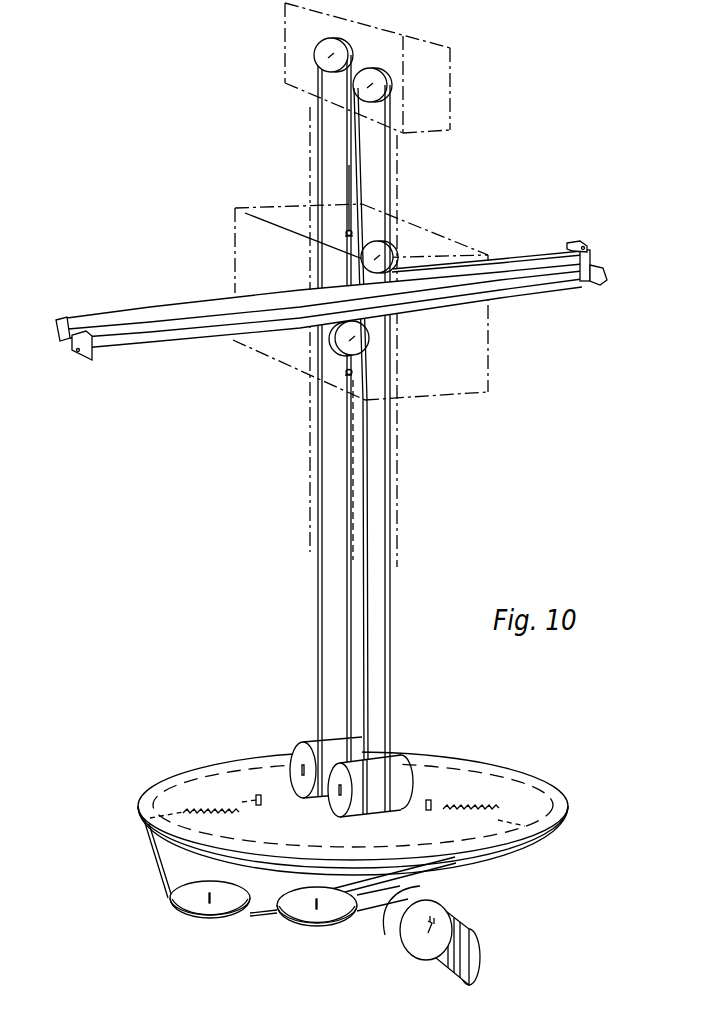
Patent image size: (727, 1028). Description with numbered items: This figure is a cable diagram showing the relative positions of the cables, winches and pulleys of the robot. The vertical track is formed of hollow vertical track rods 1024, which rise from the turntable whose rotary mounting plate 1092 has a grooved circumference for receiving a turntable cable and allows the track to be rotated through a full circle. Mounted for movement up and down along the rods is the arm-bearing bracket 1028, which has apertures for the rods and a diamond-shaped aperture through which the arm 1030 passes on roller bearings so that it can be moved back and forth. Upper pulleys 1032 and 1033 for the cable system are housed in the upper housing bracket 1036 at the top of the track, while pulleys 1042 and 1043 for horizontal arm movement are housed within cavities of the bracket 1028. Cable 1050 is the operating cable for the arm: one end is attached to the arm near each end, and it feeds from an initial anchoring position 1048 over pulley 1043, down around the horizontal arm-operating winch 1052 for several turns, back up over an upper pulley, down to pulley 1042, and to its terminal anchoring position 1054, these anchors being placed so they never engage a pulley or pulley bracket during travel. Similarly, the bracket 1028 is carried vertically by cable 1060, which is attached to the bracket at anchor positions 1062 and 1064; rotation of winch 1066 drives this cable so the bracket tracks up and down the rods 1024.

The vertical track rods 1024 is at (407, 337).
The arm-bearing bracket 1028 is at (399, 303).
The arm 1030 is at (331, 299).
The upper pulley 1032 is at (273, 49).
The upper pulley 1033 is at (433, 85).
The upper housing bracket 1036 is at (389, 68).
The pulley 1042 is at (418, 235).
The pulley 1043 is at (299, 365).
The initial anchoring position 1048 is at (51, 368).
The cable 1050 is at (413, 422).
The arm-operating winch 1052 is at (396, 798).
The terminal anchoring position 1054 is at (555, 215).
The cable 1060 is at (293, 400).
The anchor position 1062 is at (287, 200).
The anchor position 1064 is at (290, 465).
The winch 1066 is at (276, 757).
The rotary mounting plate 1092 is at (376, 813).